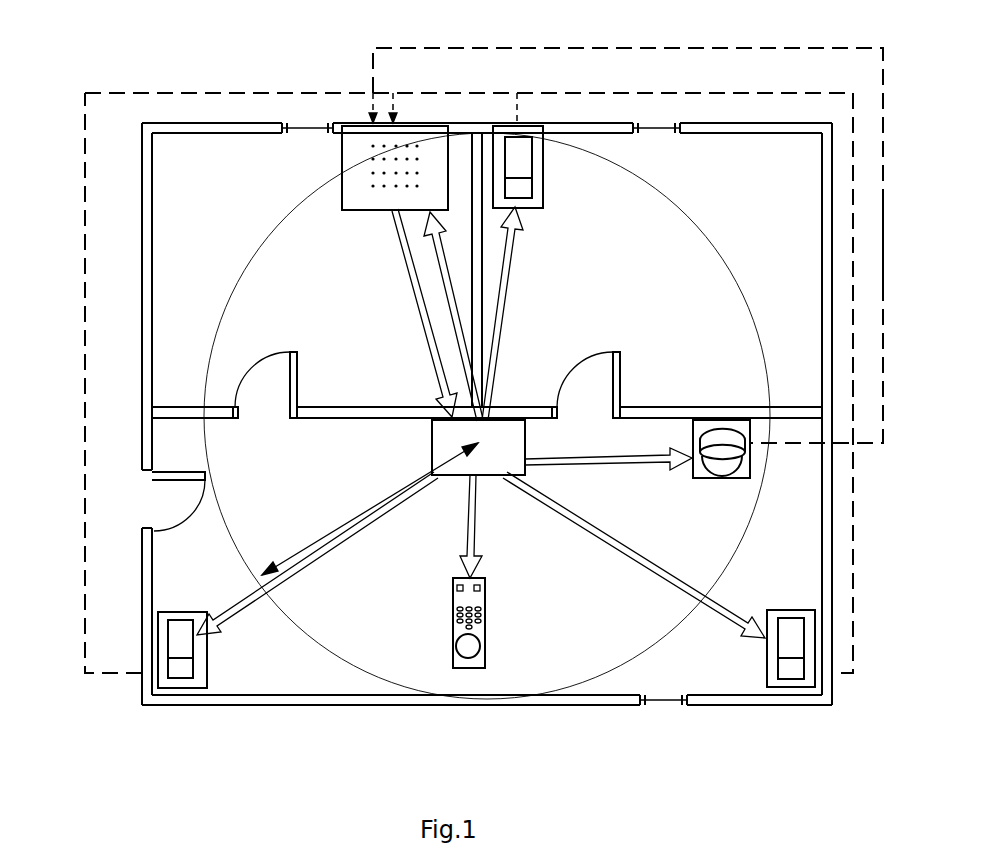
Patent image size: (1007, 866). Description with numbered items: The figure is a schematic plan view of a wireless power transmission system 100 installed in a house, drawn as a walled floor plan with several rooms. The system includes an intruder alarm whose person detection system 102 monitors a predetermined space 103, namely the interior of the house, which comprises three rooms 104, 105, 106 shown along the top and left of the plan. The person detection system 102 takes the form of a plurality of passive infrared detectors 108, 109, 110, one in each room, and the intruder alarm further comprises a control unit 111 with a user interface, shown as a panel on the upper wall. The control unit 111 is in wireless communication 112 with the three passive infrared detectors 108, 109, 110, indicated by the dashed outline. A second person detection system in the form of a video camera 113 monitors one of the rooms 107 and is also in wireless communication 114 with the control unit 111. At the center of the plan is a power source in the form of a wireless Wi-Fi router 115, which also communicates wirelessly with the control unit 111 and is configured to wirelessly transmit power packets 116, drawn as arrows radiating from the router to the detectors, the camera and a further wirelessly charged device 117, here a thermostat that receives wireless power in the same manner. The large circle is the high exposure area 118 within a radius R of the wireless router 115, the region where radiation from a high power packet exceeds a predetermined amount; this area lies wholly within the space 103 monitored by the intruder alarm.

The wireless power transmission system 100 is at (289, 724).
The person detection system 102 is at (126, 710).
The predetermined space 103 is at (850, 415).
The room 104 is at (175, 165).
The room 105 is at (726, 150).
The room 106 is at (170, 453).
The room 107 is at (632, 672).
The passive infrared detector 108 is at (190, 680).
The passive infrared detector 109 is at (525, 153).
The passive infrared detector 110 is at (792, 668).
The control unit 111 is at (417, 159).
The wireless communication 112 is at (857, 93).
The video camera 113 is at (743, 470).
The wireless communication 114 is at (883, 263).
The wireless Wi-Fi router 115 is at (467, 470).
The power packets 116 is at (497, 317).
The wirelessly charged device 117 is at (487, 642).
The high exposure area 118 is at (343, 658).